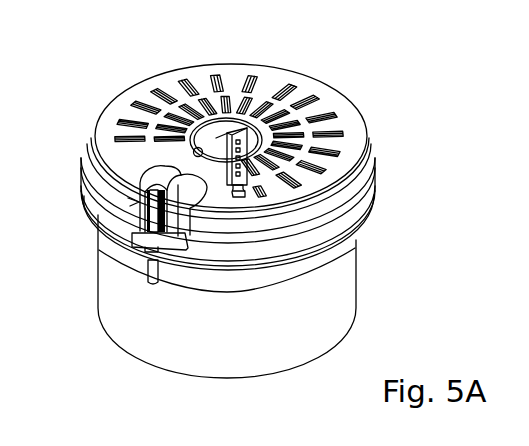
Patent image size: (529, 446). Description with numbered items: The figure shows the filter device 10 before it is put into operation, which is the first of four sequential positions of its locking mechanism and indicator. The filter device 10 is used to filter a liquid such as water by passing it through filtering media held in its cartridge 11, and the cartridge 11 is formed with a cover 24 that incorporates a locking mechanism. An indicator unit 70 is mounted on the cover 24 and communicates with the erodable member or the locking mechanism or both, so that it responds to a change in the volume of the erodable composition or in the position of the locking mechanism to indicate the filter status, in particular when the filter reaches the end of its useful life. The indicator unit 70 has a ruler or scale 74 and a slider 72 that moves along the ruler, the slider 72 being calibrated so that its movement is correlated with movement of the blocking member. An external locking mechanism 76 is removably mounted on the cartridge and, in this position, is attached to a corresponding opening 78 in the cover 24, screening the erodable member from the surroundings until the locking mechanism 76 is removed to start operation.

The filter device 10 is at (367, 108).
The cartridge 11 is at (262, 318).
The cover 24 is at (350, 168).
The indicator unit 70 is at (84, 205).
The slider 72 is at (153, 240).
The ruler or scale 74 is at (139, 202).
The external locking mechanism 76 is at (243, 142).
The opening 78 is at (238, 198).